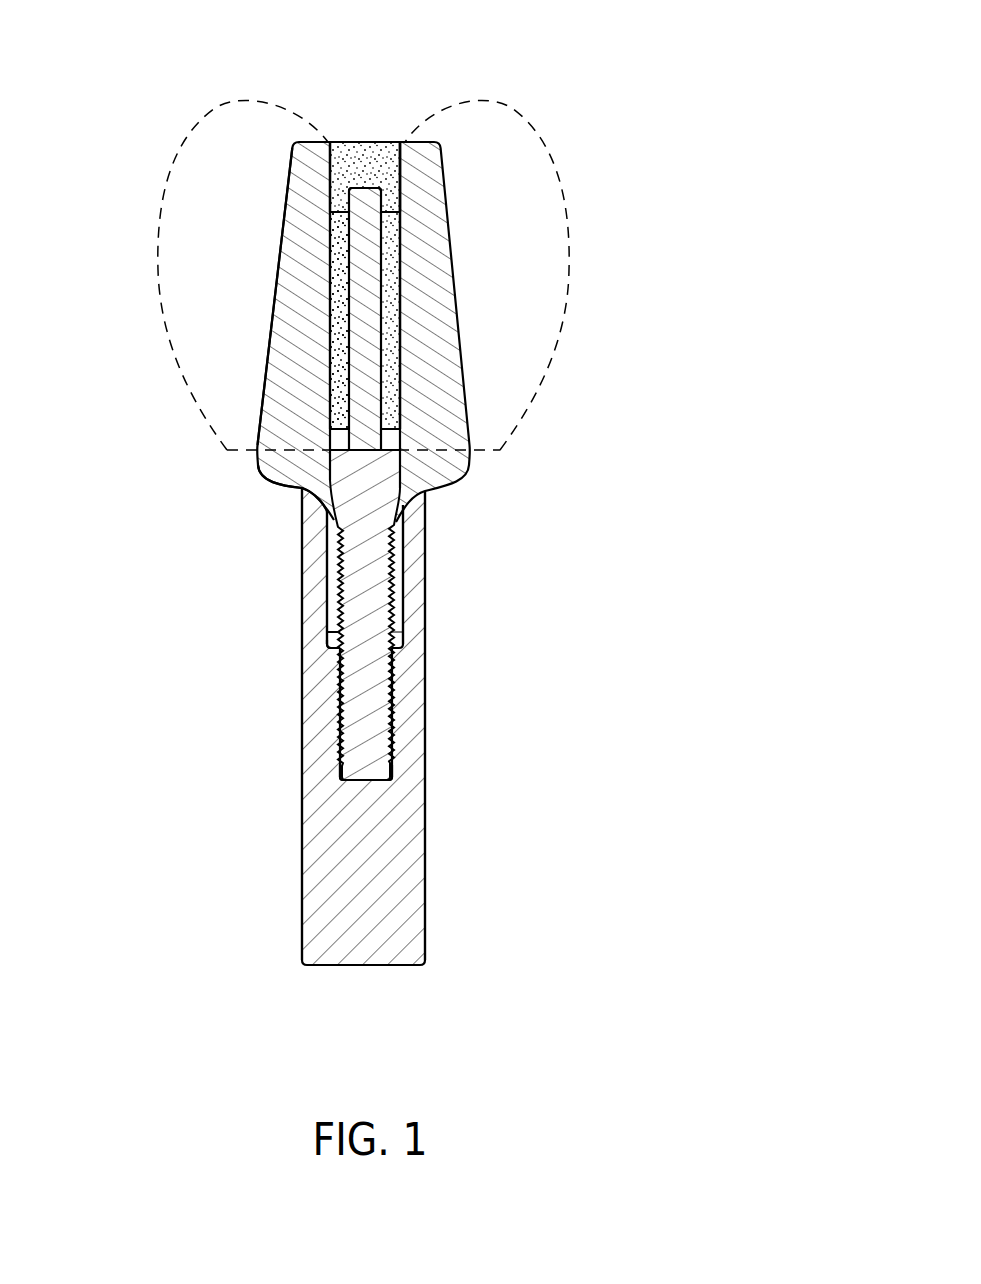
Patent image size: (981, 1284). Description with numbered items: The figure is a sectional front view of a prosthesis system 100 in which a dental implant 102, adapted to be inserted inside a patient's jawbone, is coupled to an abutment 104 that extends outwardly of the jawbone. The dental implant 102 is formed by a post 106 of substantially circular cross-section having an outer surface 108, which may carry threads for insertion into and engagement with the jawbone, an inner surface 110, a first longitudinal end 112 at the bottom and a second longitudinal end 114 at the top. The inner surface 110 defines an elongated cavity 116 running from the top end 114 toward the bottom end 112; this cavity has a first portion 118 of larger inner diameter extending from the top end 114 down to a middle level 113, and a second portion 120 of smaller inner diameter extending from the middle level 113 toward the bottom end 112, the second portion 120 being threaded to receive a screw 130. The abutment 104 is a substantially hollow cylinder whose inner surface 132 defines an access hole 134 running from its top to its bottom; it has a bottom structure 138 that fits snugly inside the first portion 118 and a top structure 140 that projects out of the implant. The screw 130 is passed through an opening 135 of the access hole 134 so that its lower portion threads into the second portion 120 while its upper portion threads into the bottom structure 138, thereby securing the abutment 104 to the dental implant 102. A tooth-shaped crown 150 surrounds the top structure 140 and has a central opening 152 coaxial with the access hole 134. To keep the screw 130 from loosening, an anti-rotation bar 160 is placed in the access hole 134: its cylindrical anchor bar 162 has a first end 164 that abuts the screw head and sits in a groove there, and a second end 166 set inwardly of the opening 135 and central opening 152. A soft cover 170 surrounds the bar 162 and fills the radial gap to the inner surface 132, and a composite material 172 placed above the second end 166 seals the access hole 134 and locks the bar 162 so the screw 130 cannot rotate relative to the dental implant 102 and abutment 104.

The prosthesis system 100 is at (553, 78).
The dental implant 102 is at (436, 898).
The abutment 104 is at (275, 216).
The post 106 is at (290, 898).
The outer surface 108 is at (302, 833).
The inner surface 110 is at (400, 735).
The first longitudinal end 112 is at (362, 965).
The middle level 113 is at (326, 645).
The second longitudinal end 114 is at (302, 497).
The elongated cavity 116 is at (340, 762).
The first portion 118 is at (400, 597).
The second portion 120 is at (338, 657).
The screw 130 is at (386, 760).
The inner surface 132 is at (402, 306).
The access hole 134 is at (331, 141).
The opening 135 is at (395, 160).
The bottom structure 138 is at (322, 542).
The top structure 140 is at (282, 235).
The crown 150 is at (566, 184).
The central opening 152 is at (358, 128).
The anti-rotation bar 160 is at (414, 241).
The anchor bar 162 is at (348, 247).
The first end 164 is at (262, 459).
The second end 166 is at (345, 165).
The cover 170 is at (340, 283).
The composite material 172 is at (364, 189).